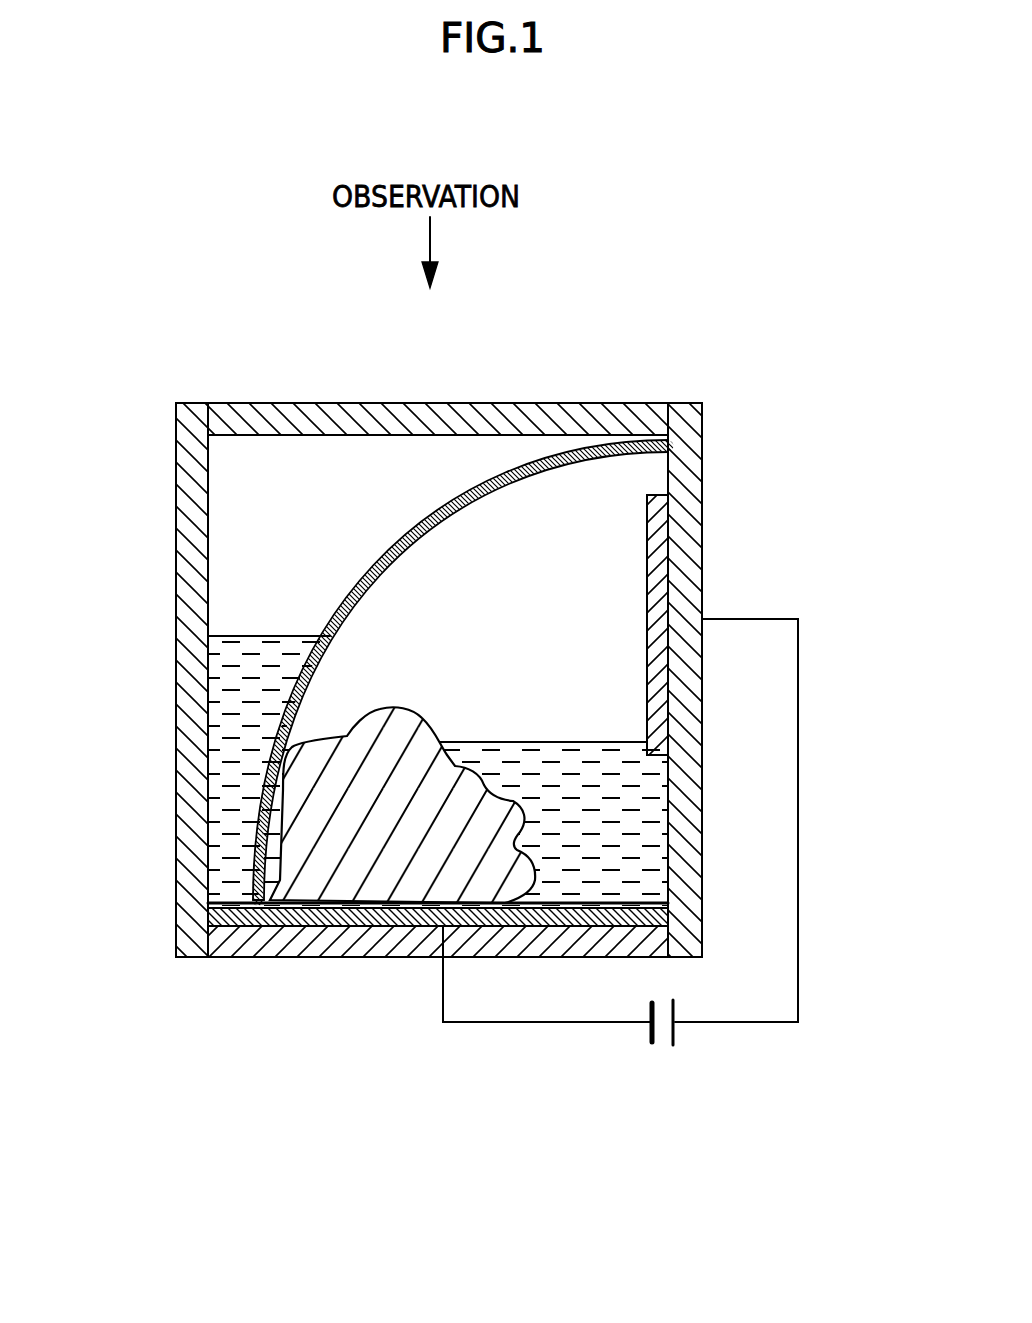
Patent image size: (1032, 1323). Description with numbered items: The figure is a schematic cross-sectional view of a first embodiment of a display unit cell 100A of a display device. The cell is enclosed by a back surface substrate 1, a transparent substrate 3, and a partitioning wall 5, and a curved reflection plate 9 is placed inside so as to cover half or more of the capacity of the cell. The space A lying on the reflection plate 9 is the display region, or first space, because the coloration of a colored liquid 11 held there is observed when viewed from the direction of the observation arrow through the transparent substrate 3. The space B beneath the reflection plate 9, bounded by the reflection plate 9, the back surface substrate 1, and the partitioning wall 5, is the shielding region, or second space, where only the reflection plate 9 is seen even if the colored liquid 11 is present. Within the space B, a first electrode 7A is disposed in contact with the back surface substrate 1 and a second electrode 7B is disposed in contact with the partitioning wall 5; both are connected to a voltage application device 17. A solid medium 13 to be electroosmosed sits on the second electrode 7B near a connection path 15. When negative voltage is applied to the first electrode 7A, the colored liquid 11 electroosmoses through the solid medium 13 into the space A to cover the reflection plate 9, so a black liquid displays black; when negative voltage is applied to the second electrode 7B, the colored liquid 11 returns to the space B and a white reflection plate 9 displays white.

The back surface substrate 1 is at (298, 947).
The transparent substrate 3 is at (398, 415).
The partitioning wall 5 is at (692, 447).
The first electrode 7A is at (400, 915).
The second electrode 7B is at (657, 538).
The curved reflection plate 9 is at (535, 460).
The colored liquid 11 is at (228, 683).
The solid medium to be electroosmosed 13 is at (520, 805).
The connection path 15 is at (215, 899).
The voltage application device 17 is at (657, 1060).
The display unit cell 100A is at (723, 290).
The first space A is at (260, 532).
The second space B is at (562, 595).